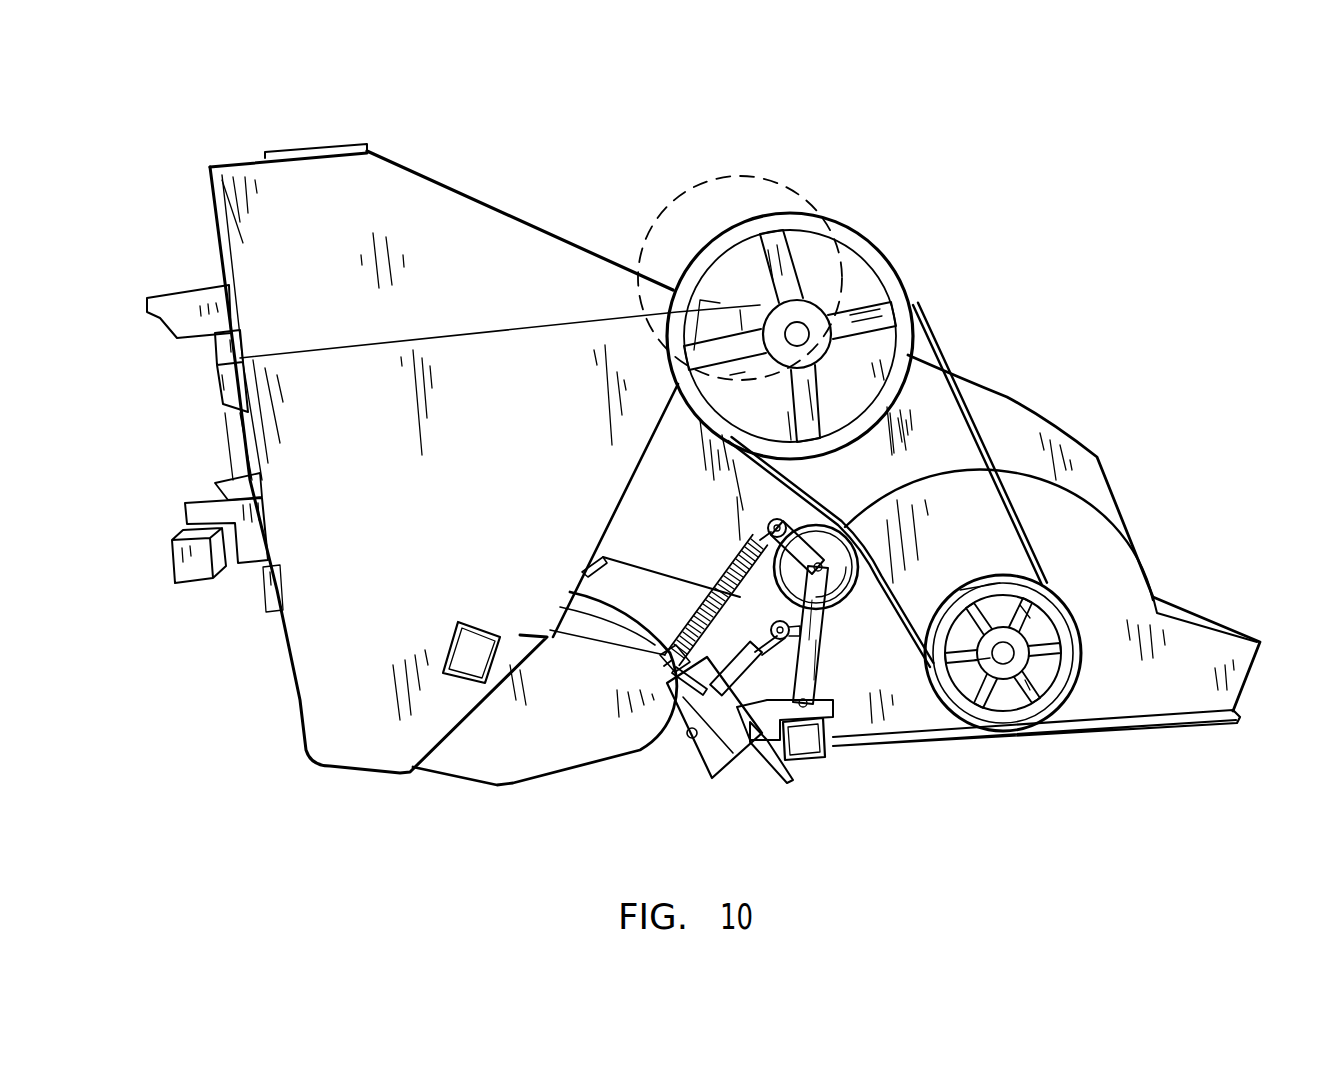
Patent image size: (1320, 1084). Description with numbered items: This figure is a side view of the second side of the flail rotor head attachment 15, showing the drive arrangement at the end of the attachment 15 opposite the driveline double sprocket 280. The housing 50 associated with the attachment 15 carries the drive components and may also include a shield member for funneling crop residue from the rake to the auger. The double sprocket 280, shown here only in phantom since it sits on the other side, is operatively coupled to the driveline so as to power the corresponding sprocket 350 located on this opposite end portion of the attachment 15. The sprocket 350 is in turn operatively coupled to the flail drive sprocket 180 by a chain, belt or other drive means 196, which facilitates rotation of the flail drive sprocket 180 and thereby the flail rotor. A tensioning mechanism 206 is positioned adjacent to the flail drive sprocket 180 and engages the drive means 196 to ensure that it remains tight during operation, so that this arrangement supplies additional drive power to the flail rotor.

The attachment 15 is at (528, 176).
The housing 50 is at (1048, 420).
The driveline double sprocket 280 is at (713, 177).
The sprocket 350 is at (800, 331).
The drive means 196 is at (1027, 535).
The flail drive sprocket 180 is at (1008, 657).
The tensioning mechanism 206 is at (838, 580).